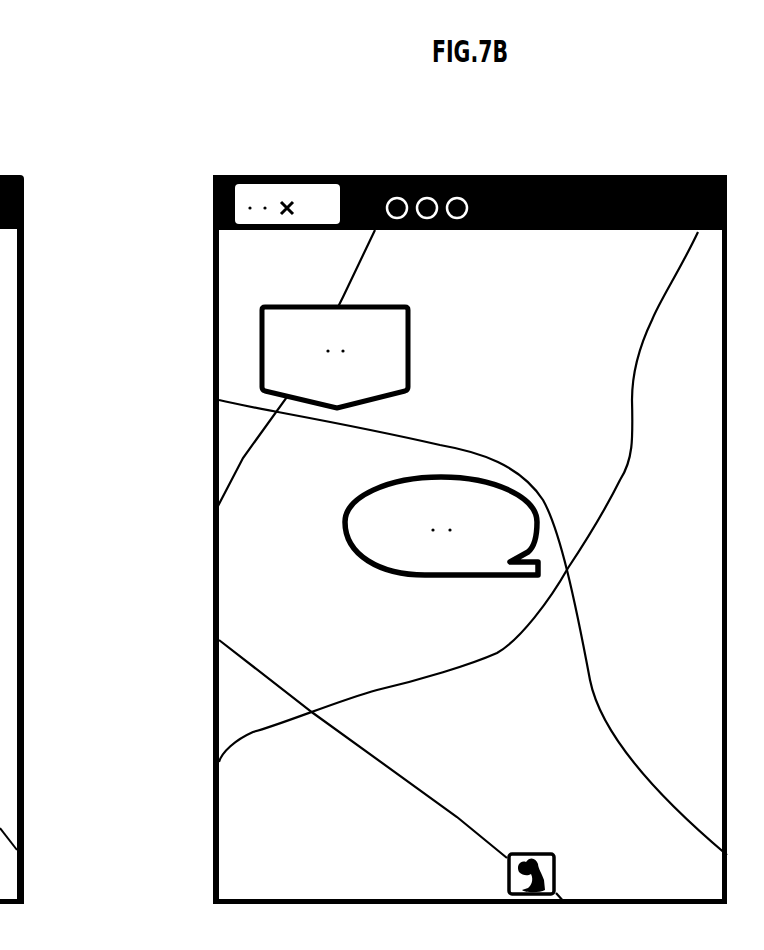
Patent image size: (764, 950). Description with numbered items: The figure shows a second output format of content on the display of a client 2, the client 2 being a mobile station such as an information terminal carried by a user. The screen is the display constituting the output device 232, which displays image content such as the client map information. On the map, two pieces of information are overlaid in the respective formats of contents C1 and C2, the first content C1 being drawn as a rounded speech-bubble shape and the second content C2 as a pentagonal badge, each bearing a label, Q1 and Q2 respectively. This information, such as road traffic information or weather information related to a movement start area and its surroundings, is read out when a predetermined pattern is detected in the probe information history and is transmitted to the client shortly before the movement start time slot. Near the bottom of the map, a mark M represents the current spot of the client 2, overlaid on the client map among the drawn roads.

The client 2 is at (366, 493).
The output device 232 is at (221, 178).
The content C1 is at (310, 526).
The content C2 is at (245, 381).
The first query Q1 is at (441, 526).
The second query Q2 is at (335, 357).
The mark M is at (519, 853).